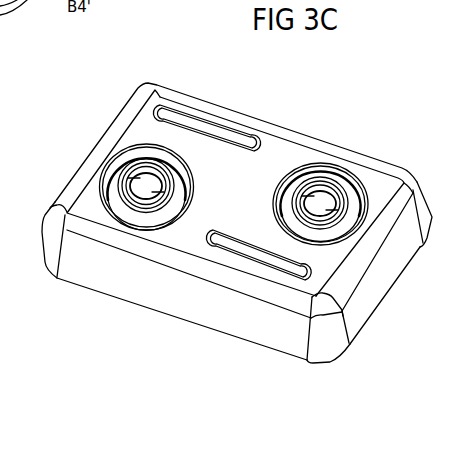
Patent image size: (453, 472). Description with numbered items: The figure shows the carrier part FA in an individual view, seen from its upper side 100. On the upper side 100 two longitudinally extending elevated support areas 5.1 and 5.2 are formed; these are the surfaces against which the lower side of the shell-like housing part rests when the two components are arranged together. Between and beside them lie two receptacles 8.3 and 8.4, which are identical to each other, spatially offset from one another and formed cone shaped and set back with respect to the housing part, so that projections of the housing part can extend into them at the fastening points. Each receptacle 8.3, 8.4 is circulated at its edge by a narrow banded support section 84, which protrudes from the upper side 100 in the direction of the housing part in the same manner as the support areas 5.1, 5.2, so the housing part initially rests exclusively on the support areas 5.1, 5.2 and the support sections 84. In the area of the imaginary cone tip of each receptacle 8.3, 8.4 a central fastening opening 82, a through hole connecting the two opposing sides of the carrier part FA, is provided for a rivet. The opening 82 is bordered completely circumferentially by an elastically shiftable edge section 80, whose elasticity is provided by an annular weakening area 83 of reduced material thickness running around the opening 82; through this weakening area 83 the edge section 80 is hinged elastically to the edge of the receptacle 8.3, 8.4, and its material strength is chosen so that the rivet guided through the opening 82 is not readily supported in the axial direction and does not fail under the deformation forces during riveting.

The upper side 100 is at (270, 168).
The carrier part FA is at (378, 321).
The support area 5.1 is at (175, 118).
The support area 5.2 is at (251, 255).
The edge section 80 is at (143, 173).
The fastening opening 82 is at (149, 200).
The weakening area 83 is at (162, 168).
The support section 84 is at (131, 214).
The receptacle 8.3 is at (121, 171).
The receptacle 8.4 is at (346, 188).